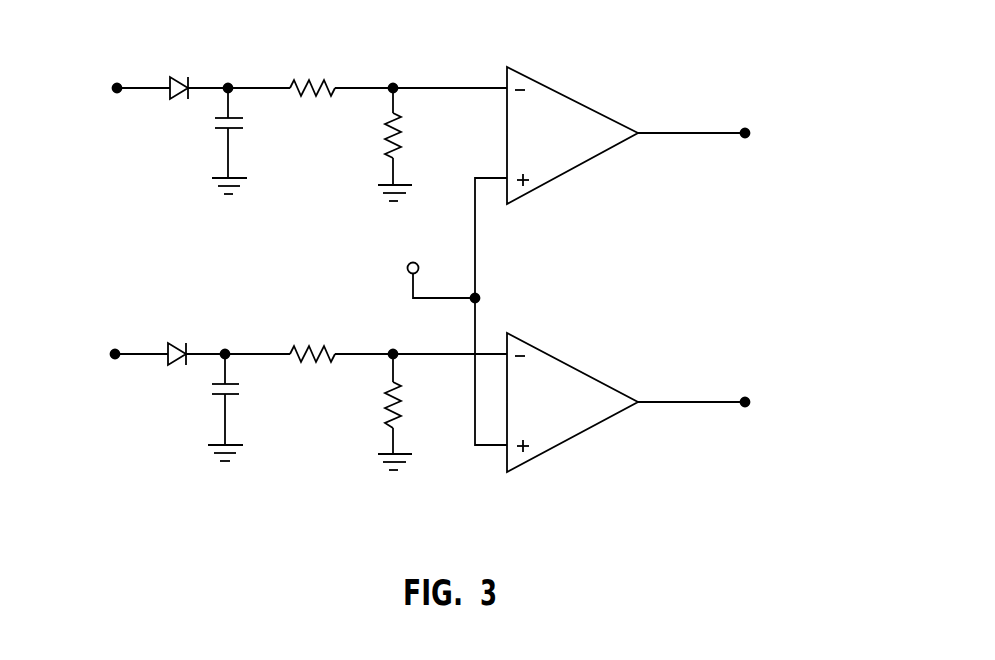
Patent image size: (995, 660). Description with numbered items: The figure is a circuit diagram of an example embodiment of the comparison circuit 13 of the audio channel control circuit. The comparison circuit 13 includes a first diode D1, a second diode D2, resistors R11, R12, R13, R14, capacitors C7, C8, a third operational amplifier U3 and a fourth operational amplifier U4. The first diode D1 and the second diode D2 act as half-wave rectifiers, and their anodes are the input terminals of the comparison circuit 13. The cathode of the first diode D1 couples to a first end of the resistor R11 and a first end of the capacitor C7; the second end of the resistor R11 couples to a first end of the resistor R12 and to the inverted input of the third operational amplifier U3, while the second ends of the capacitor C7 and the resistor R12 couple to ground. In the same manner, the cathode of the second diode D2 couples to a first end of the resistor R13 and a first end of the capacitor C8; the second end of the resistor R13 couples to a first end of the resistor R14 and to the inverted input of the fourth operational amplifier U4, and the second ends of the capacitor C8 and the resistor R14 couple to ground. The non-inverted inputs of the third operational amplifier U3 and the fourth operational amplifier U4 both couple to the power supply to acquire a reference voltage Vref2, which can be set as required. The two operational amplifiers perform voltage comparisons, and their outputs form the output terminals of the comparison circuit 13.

The comparison circuit 13 is at (467, 58).
The first diode D1 is at (181, 78).
The second diode D2 is at (179, 343).
The capacitor C7 is at (244, 141).
The capacitor C8 is at (245, 407).
The resistor R11 is at (312, 73).
The resistor R12 is at (377, 144).
The resistor R13 is at (312, 339).
The resistor R14 is at (377, 412).
The third operational amplifier U3 is at (572, 135).
The fourth operational amplifier U4 is at (572, 402).
The reference voltage Vref2 is at (431, 267).